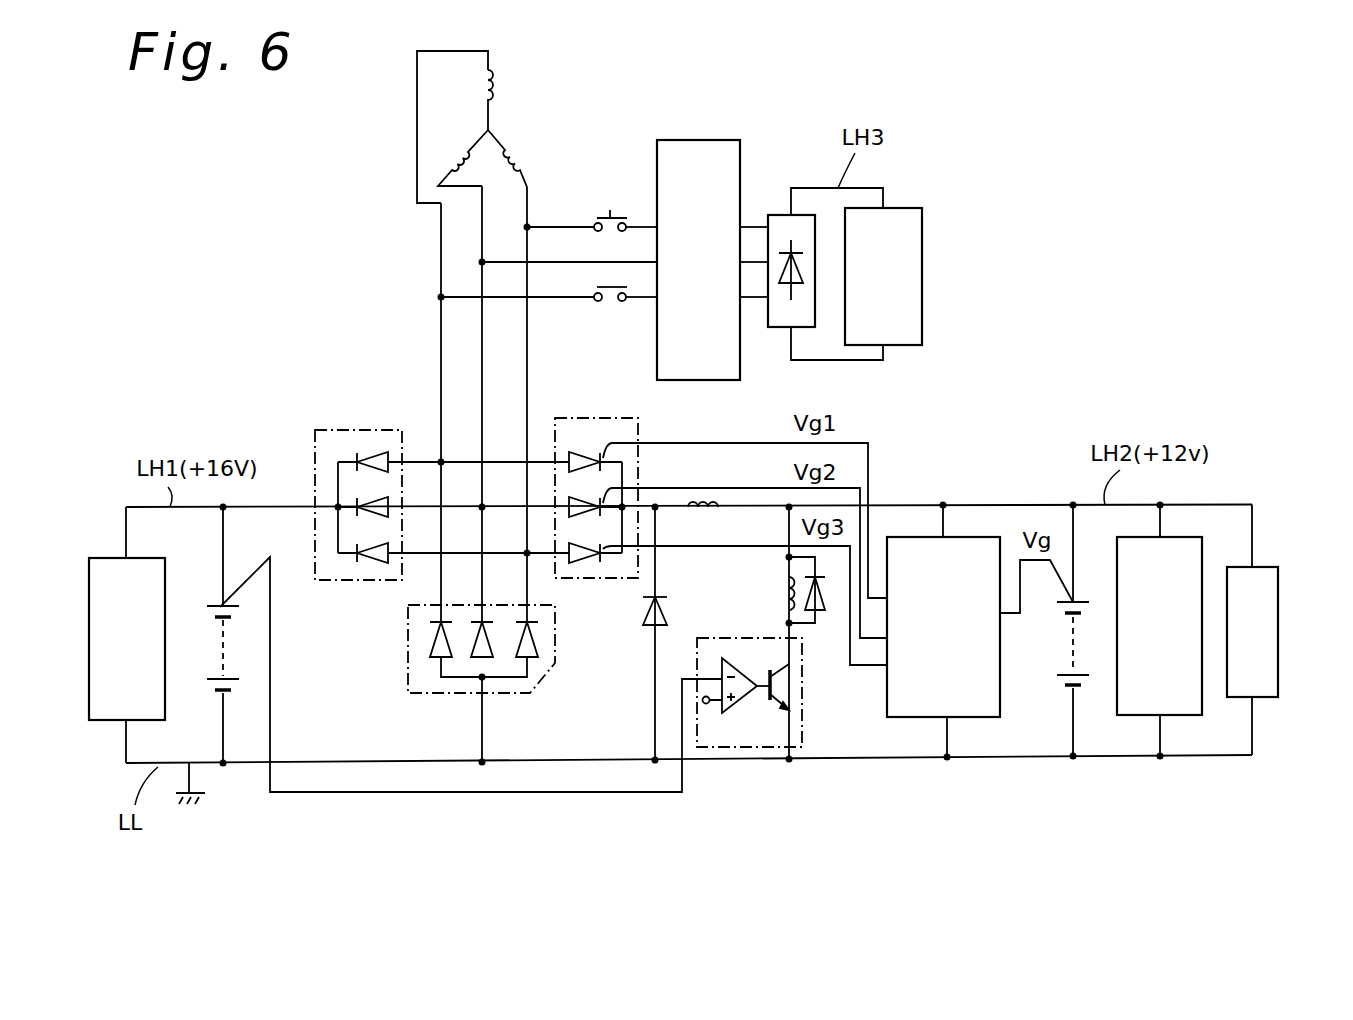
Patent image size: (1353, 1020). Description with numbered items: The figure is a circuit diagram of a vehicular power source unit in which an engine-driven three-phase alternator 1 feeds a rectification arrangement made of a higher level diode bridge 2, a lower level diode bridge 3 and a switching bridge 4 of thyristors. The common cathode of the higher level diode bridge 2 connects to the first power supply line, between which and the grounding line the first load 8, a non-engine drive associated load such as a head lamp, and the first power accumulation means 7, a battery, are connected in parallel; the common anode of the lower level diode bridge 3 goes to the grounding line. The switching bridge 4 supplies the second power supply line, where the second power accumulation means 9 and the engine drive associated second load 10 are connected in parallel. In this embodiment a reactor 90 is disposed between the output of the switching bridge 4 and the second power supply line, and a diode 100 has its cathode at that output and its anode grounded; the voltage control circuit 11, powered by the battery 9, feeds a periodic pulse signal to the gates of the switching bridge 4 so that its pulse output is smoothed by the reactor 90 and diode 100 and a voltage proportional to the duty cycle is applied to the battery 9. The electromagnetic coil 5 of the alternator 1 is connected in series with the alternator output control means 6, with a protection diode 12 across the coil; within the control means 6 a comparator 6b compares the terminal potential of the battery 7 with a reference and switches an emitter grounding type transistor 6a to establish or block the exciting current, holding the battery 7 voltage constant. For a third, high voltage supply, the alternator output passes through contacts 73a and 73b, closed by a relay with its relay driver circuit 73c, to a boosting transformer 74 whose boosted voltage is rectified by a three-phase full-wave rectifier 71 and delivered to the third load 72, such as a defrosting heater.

The alternator 1 is at (495, 137).
The higher level diode bridge 2 is at (340, 580).
The lower level diode bridge 3 is at (408, 690).
The switching bridge 4 is at (585, 418).
The electromagnetic coil 5 is at (785, 592).
The alternator output control means 6 is at (775, 721).
The transistor 6a is at (782, 692).
The comparator 6b is at (745, 698).
The first power accumulation means 7 is at (207, 685).
The first load 8 is at (165, 600).
The second power accumulation means 9 is at (1088, 683).
The second load 10 is at (1202, 695).
The voltage control circuit 11 is at (1000, 690).
The protection diode 12 is at (826, 594).
The three-phase full-wave rectifier 71 is at (776, 213).
The third load 72 is at (908, 207).
The contact 73a is at (607, 212).
The contact 73b is at (598, 303).
The relay driver circuit 73c is at (1278, 627).
The boosting transformer 74 is at (702, 140).
The reactor 90 is at (700, 515).
The diode 100 is at (645, 608).